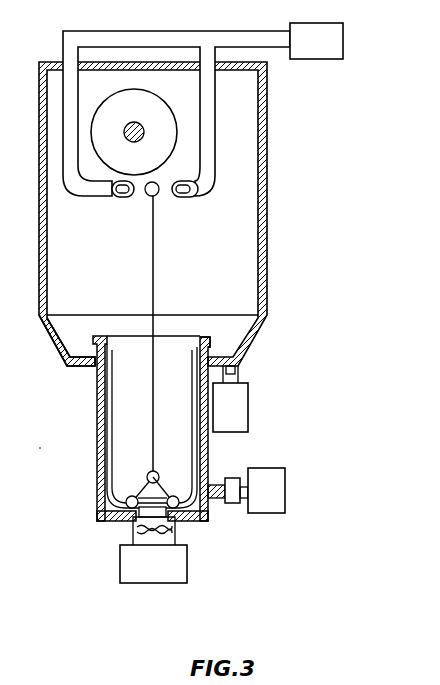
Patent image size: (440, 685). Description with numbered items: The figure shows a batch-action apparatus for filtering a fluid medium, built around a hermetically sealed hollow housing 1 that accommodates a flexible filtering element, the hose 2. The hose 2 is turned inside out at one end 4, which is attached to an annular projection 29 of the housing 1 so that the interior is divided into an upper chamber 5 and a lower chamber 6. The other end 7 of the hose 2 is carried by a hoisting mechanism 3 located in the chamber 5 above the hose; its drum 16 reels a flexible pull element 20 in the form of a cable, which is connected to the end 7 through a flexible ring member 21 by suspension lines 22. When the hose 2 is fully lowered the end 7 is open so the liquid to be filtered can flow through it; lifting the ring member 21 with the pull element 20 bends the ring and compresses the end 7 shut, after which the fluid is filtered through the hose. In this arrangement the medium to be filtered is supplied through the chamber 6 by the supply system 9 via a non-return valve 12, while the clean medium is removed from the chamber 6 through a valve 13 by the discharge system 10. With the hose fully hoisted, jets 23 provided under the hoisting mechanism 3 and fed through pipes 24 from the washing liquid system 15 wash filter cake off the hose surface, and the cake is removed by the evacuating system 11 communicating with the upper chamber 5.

The housing 1 is at (264, 132).
The flexible filtering element 2 is at (212, 457).
The hoisting mechanism 3 is at (177, 145).
The end of the hose 4 is at (93, 337).
The upper chamber 5 is at (243, 284).
The lower chamber 6 is at (110, 503).
The other end of the hose 7 is at (173, 490).
The system for supplying the medium to be filtered 9 is at (127, 565).
The system for discharging the clean medium 10 is at (275, 490).
The system for evacuating filter cake 11 is at (242, 407).
The non-return valve 12 is at (157, 518).
The valve 13 is at (232, 499).
The washing liquid system 15 is at (323, 47).
The drum 16 is at (155, 162).
The pull element 20 is at (154, 278).
The flexible ring member 21 is at (123, 517).
The suspension lines 22 is at (143, 490).
The jets 23 is at (122, 200).
The pipes 24 is at (63, 42).
The annular projection 29 is at (213, 350).